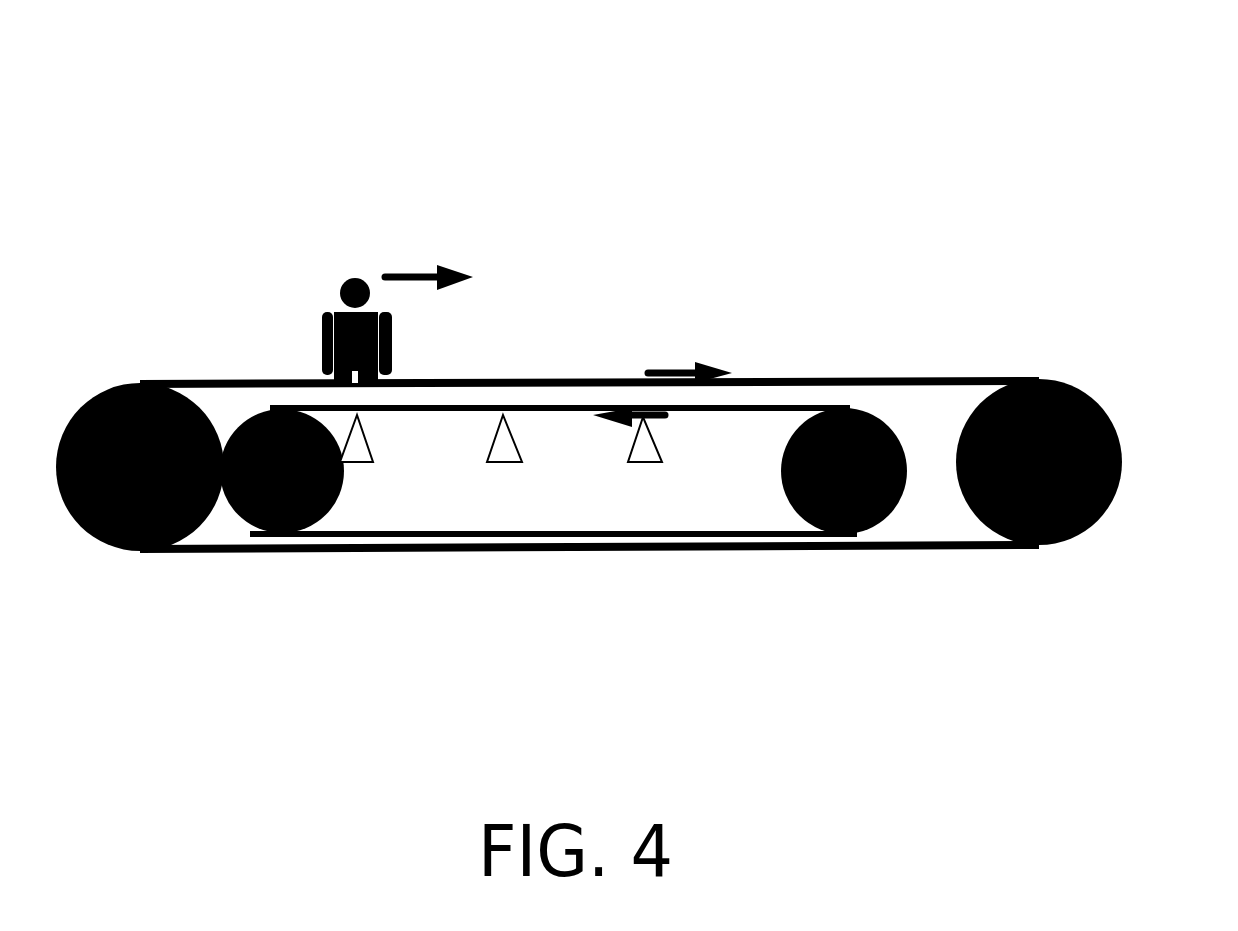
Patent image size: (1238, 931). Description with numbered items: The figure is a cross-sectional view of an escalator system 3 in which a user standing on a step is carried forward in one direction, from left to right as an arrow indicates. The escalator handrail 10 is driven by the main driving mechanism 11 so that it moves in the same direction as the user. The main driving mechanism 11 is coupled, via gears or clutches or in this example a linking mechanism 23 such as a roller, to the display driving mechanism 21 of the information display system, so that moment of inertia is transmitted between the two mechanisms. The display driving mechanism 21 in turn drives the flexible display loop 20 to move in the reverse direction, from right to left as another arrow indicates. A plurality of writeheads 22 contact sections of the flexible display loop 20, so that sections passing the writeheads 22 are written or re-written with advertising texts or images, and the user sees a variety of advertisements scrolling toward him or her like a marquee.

The escalator system 3 is at (506, 198).
The escalator handrail 10 is at (915, 378).
The main driving mechanism 11 is at (1047, 443).
The flexible display loop 20 is at (585, 402).
The display driving mechanism 21 is at (885, 520).
The writeheads 22 is at (362, 462).
The linking mechanism 23 is at (942, 470).